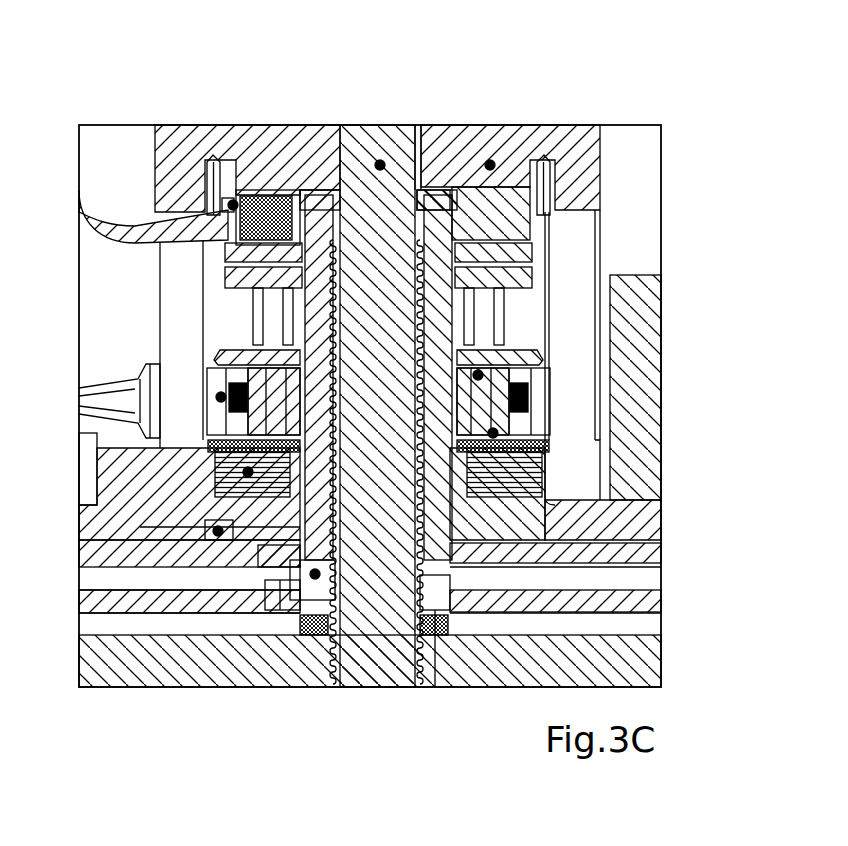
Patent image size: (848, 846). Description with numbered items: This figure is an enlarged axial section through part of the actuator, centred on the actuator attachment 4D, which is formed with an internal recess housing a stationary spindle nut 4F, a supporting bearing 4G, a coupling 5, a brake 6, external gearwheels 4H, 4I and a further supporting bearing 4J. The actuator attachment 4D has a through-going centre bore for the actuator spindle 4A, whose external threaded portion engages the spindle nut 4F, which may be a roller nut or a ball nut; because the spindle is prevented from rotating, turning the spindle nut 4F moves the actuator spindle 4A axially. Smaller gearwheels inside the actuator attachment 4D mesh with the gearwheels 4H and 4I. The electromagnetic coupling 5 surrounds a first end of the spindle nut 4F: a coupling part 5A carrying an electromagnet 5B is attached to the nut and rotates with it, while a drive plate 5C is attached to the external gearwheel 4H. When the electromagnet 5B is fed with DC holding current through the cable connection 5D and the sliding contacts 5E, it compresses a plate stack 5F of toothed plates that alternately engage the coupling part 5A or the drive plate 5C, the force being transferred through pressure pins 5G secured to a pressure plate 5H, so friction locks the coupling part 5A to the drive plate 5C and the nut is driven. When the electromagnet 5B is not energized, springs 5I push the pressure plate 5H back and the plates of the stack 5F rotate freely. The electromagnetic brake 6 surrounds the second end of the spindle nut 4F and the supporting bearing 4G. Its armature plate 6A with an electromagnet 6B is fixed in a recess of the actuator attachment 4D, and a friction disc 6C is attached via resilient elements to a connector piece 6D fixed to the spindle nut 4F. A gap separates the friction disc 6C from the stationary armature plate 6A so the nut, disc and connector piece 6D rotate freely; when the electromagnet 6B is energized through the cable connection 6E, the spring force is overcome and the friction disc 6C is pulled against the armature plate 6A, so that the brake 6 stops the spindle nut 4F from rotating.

The actuator spindle 4A is at (380, 165).
The actuator attachment 4D is at (490, 165).
The spindle nut 4F is at (315, 574).
The supporting bearing 4G is at (438, 190).
The external gearwheel 4H is at (668, 558).
The external gearwheel 4I is at (668, 605).
The supporting bearing 4J is at (435, 687).
The electromagnetic coupling 5 is at (549, 497).
The coupling part 5A is at (185, 592).
The electromagnet 5B is at (248, 472).
The drive plate 5C is at (290, 598).
The cable connection 5D is at (115, 400).
The sliding contacts 5E is at (221, 397).
The plate stack 5F is at (218, 531).
The pressure pins 5G is at (478, 375).
The pressure plate 5H is at (598, 448).
The springs 5I is at (545, 398).
The electromagnetic brake 6 is at (570, 252).
The armature plate 6A is at (232, 200).
The electromagnet 6B is at (268, 200).
The friction disc 6C is at (215, 252).
The connector piece 6D is at (215, 282).
The cable connection 6E is at (127, 212).